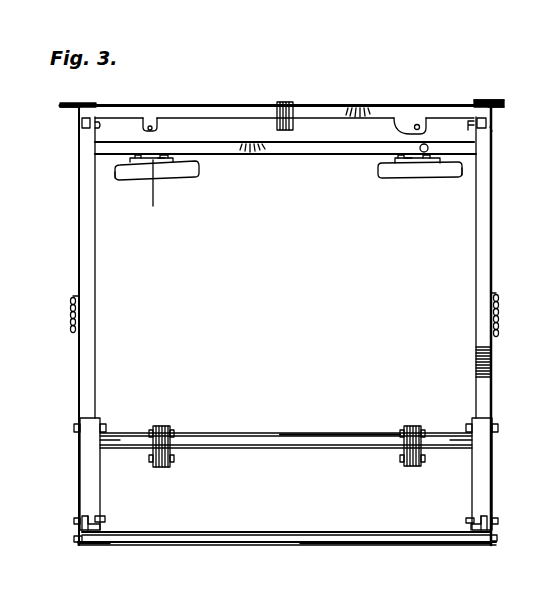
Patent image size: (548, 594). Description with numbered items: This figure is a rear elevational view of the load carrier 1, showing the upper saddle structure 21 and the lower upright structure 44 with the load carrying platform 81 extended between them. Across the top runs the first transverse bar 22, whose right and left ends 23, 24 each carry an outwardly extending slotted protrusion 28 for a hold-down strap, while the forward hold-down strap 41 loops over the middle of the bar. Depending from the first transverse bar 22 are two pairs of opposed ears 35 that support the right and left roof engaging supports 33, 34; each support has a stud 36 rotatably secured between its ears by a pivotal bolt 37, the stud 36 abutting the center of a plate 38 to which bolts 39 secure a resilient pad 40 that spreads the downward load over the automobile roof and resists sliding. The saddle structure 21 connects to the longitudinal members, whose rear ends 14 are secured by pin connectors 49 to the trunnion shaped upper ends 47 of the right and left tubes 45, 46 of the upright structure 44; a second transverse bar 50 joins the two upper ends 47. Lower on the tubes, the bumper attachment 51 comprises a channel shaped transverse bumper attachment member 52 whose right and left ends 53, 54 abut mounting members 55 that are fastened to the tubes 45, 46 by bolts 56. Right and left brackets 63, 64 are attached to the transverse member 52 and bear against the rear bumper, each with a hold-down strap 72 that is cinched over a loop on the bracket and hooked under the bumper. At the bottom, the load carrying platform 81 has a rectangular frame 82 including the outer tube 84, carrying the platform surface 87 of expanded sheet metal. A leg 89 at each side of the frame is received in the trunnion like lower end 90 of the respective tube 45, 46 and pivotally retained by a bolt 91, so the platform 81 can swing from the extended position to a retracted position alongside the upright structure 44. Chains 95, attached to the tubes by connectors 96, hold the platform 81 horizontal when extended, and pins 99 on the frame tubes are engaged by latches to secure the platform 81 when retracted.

The load carrier 1 is at (474, 52).
The rear end 14 is at (88, 105).
The saddle structure 21 is at (60, 102).
The first transverse bar 22 is at (253, 105).
The right end 23 is at (492, 108).
The left end 24 is at (73, 110).
The protrusion 28 is at (62, 106).
The right roof engaging support 33 is at (380, 178).
The left roof engaging support 34 is at (200, 170).
The opposed ears 35 is at (148, 128).
The stud 36 is at (394, 118).
The bolt 37 is at (157, 127).
The plate 38 is at (162, 155).
The bolts 39 is at (407, 155).
The pad 40 is at (118, 177).
The forward hold-down strap 41 is at (286, 100).
The upright structure 44 is at (491, 225).
The right tube 45 is at (491, 253).
The left tube 46 is at (79, 240).
The upper end 47 is at (492, 123).
The pin connector 49 is at (75, 128).
The second transverse bar 50 is at (306, 153).
The bumper attachment 51 is at (252, 433).
The transverse bumper attachment member 52 is at (312, 435).
The right end 53 is at (457, 430).
The left end 54 is at (118, 433).
The mounting member 55 is at (80, 465).
The bolts 56 is at (74, 428).
The right bracket 63 is at (404, 427).
The left bracket 64 is at (170, 427).
The hold-down strap 72 is at (170, 458).
The load carrying platform 81 is at (82, 547).
The rectangular frame 82 is at (255, 545).
The outer tube 84 is at (354, 547).
The platform surface 87 is at (200, 518).
The leg 89 is at (88, 515).
The lower end 90 is at (100, 525).
The bolt 91 is at (74, 522).
The chains 95 is at (70, 317).
The connector 96 is at (72, 298).
The pins 99 is at (74, 539).